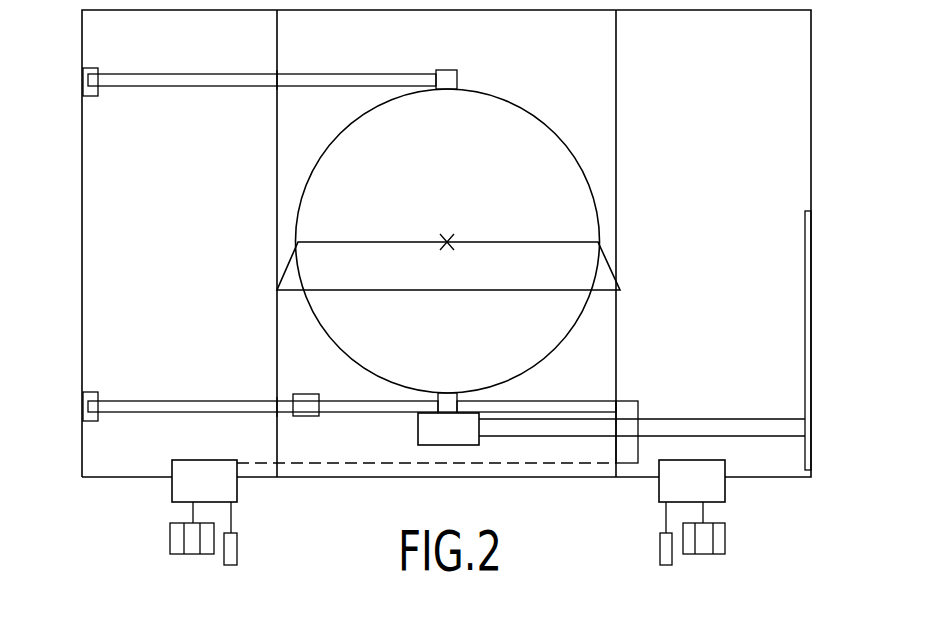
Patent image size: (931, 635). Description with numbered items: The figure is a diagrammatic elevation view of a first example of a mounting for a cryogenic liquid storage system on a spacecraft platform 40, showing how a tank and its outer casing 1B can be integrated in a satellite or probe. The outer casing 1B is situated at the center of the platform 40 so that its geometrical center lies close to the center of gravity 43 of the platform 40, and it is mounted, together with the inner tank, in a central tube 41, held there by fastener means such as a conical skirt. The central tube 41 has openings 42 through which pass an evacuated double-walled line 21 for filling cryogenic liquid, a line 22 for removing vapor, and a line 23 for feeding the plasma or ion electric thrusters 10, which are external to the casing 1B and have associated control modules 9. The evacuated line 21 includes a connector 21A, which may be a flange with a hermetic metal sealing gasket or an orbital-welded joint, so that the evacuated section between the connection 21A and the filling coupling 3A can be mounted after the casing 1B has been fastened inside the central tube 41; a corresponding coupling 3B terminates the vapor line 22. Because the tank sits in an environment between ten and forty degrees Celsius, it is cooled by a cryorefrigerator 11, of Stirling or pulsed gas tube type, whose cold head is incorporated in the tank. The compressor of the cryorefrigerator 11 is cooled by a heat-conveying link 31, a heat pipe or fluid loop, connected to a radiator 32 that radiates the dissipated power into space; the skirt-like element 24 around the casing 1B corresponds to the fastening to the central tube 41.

The platform 40 is at (82, 44).
The central tube 41 is at (616, 102).
The radiator 32 is at (805, 278).
The line for removing vapor 22 is at (168, 76).
The upper bracket 3B is at (84, 92).
The outer casing 1B is at (497, 118).
The openings 42 is at (275, 86).
The reflector 24 is at (598, 263).
The center of gravity 43 is at (446, 236).
The evacuated double-walled line 21 is at (242, 445).
The filling coupling 3A is at (86, 414).
The connector 21A is at (306, 400).
The line for feeding the electric thrusters 23 is at (630, 400).
The heat-conveying link 31 is at (718, 428).
The cryorefrigerator 11 is at (447, 446).
The control modules 9 is at (211, 492).
The electric thrusters 10 is at (191, 554).